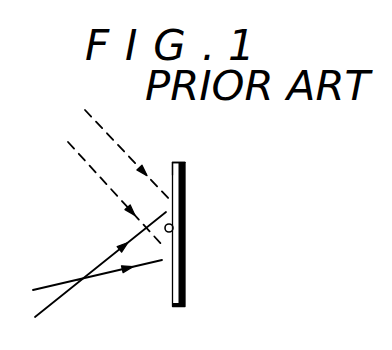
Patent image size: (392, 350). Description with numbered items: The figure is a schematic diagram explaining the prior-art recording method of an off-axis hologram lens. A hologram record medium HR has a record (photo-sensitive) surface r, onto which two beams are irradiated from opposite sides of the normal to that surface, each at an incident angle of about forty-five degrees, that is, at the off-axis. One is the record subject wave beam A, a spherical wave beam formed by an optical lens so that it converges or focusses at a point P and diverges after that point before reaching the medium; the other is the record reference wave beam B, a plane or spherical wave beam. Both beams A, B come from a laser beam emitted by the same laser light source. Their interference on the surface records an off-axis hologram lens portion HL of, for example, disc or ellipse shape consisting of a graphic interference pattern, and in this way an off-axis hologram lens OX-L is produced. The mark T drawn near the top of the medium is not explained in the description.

The record reference wave beam B is at (122, 148).
The record subject wave beam A is at (100, 268).
The focal point P is at (80, 276).
The hologram record medium HR is at (186, 163).
The off-axis hologram lens portion HL is at (263, 202).
The off-axis hologram lens OX-L is at (285, 312).
The plate element T is at (172, 163).